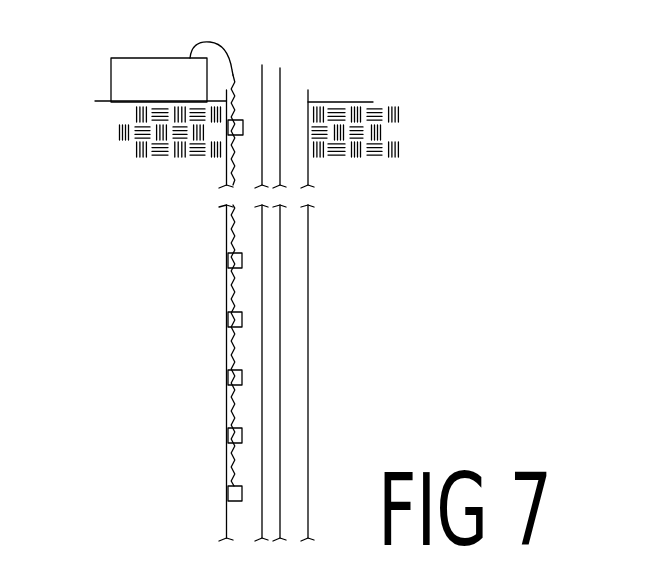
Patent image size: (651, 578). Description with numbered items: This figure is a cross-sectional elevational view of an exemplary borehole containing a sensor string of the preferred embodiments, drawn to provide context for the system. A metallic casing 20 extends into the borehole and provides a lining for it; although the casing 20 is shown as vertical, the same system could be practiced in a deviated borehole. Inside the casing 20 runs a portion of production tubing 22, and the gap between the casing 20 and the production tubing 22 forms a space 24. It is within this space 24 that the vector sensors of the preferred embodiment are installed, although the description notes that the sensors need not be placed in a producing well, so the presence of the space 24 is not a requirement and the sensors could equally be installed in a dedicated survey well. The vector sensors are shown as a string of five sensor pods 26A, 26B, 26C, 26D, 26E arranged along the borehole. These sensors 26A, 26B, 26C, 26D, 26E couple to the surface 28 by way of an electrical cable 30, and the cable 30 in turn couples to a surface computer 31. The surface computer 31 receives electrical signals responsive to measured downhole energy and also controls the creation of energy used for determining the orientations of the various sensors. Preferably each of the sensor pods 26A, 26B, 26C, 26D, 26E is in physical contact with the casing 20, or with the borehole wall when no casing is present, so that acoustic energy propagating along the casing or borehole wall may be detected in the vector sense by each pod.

The metallic casing 20 is at (308, 93).
The production tubing 22 is at (281, 77).
The space 24 is at (300, 342).
The vector sensor 26A is at (228, 260).
The vector sensor 26B is at (228, 318).
The vector sensor 26C is at (228, 377).
The vector sensor 26D is at (228, 435).
The vector sensor 26E is at (228, 493).
The surface 28 is at (100, 101).
The electrical cable 30 is at (197, 37).
The surface computer 31 is at (140, 58).